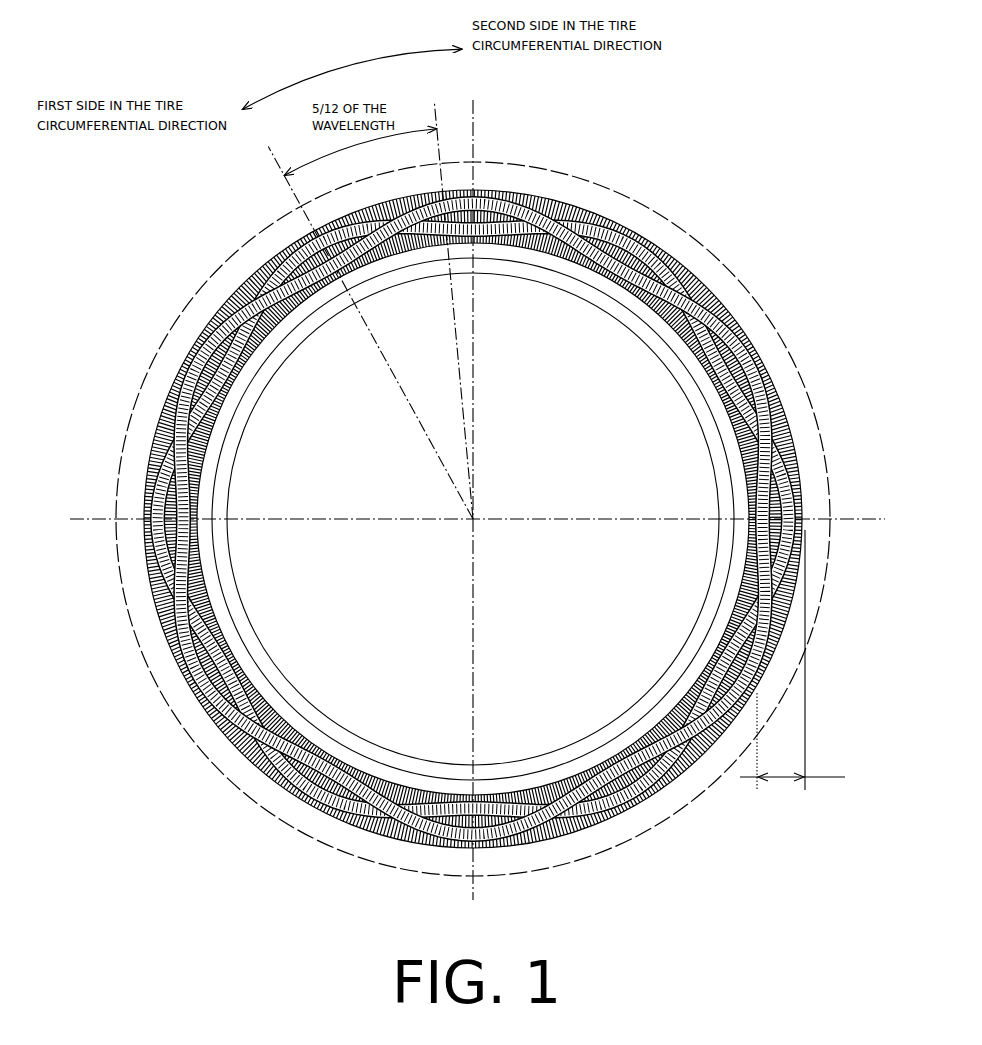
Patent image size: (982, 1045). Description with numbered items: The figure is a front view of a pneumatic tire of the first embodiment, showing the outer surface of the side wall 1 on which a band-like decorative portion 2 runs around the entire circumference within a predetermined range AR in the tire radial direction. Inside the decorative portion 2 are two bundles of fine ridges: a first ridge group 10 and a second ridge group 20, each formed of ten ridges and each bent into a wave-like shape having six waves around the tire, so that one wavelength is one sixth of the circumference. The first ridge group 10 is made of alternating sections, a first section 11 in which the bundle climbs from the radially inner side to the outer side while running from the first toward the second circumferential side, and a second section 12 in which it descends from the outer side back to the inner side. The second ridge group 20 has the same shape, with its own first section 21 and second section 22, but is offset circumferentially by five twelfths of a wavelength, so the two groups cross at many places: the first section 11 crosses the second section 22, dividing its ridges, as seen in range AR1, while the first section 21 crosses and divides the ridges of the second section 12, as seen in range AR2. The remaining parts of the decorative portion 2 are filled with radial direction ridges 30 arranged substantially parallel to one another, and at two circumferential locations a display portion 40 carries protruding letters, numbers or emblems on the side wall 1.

The side wall 1 is at (663, 229).
The decorative portion 2 is at (721, 408).
The first ridge group 10 is at (529, 195).
The first section of the first ridge group 11 is at (641, 277).
The second section of the first ridge group 12 is at (208, 328).
The second ridge group 20 is at (260, 270).
The first section of the second ridge group 21 is at (245, 285).
The second section of the second ridge group 22 is at (675, 258).
The radial direction ridges 30 is at (734, 327).
The display portion 40 is at (158, 511).
The predetermined range AR is at (794, 660).
The range AR1 is at (708, 277).
The range AR2 is at (521, 256).